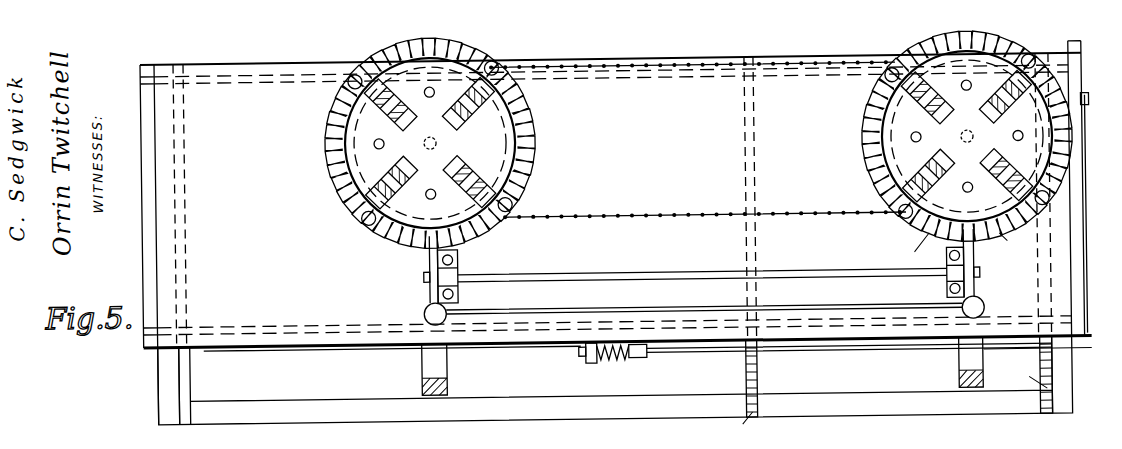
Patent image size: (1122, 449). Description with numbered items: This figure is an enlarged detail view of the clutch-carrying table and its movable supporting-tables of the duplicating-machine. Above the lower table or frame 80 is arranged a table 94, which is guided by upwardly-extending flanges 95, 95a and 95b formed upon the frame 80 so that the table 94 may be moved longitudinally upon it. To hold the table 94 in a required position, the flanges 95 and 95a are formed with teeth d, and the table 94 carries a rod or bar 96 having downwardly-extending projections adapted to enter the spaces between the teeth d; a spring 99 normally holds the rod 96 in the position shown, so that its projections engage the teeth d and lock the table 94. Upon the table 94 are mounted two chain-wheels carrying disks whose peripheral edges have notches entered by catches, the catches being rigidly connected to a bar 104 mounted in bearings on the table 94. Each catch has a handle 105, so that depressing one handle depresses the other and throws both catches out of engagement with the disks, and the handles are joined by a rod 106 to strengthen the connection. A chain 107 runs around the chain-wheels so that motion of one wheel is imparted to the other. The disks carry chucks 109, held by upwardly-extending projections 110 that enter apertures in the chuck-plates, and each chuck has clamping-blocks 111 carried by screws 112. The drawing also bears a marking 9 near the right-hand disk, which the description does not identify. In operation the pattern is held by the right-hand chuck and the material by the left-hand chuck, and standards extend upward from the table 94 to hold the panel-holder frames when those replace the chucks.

The gear tooth / roller 9 is at (961, 248).
The table or frame 80 is at (625, 380).
The table 94 is at (616, 194).
The flange 95 is at (1050, 378).
The flange 95a is at (756, 384).
The flange 95b is at (183, 379).
The rod or bar 96 is at (860, 358).
The spring 99 is at (632, 368).
The bar 104 is at (700, 281).
The handle 105 is at (421, 314).
The rod 106 is at (832, 314).
The chain 107 is at (666, 70).
The chuck 109 is at (480, 178).
The upwardly-extending projection 110 is at (1018, 142).
The clamping-block 111 is at (468, 103).
The screw 112 is at (429, 96).
The teeth d is at (889, 402).